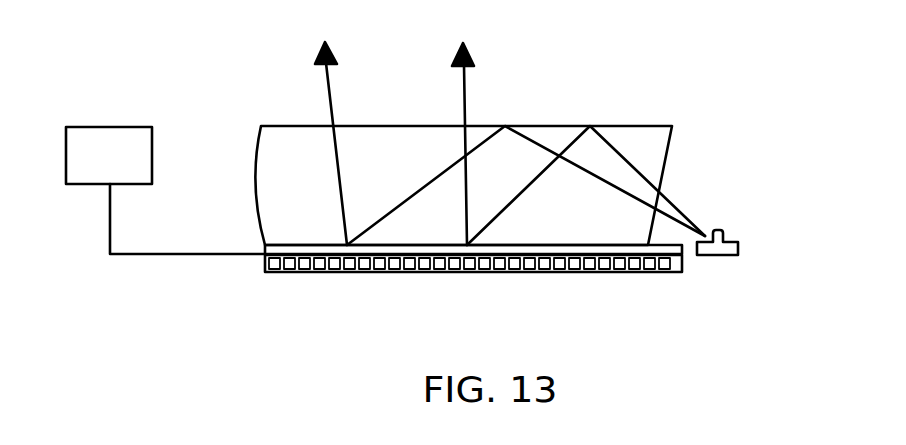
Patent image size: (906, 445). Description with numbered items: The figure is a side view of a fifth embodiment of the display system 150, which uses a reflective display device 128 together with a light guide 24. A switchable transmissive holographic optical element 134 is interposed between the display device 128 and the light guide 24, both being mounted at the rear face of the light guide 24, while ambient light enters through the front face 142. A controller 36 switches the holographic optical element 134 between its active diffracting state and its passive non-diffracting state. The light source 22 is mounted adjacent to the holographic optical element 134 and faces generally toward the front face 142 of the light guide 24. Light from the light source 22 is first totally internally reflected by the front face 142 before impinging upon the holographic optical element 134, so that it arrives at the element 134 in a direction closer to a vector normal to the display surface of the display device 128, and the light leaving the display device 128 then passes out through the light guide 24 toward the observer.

The controller 36 is at (116, 125).
The display system 150 is at (637, 108).
The switchable transmissive holographic optical element 134 is at (680, 245).
The reflective display device 128 is at (378, 273).
The front face 142 is at (368, 127).
The light guide 24 is at (657, 182).
The light source 22 is at (728, 232).